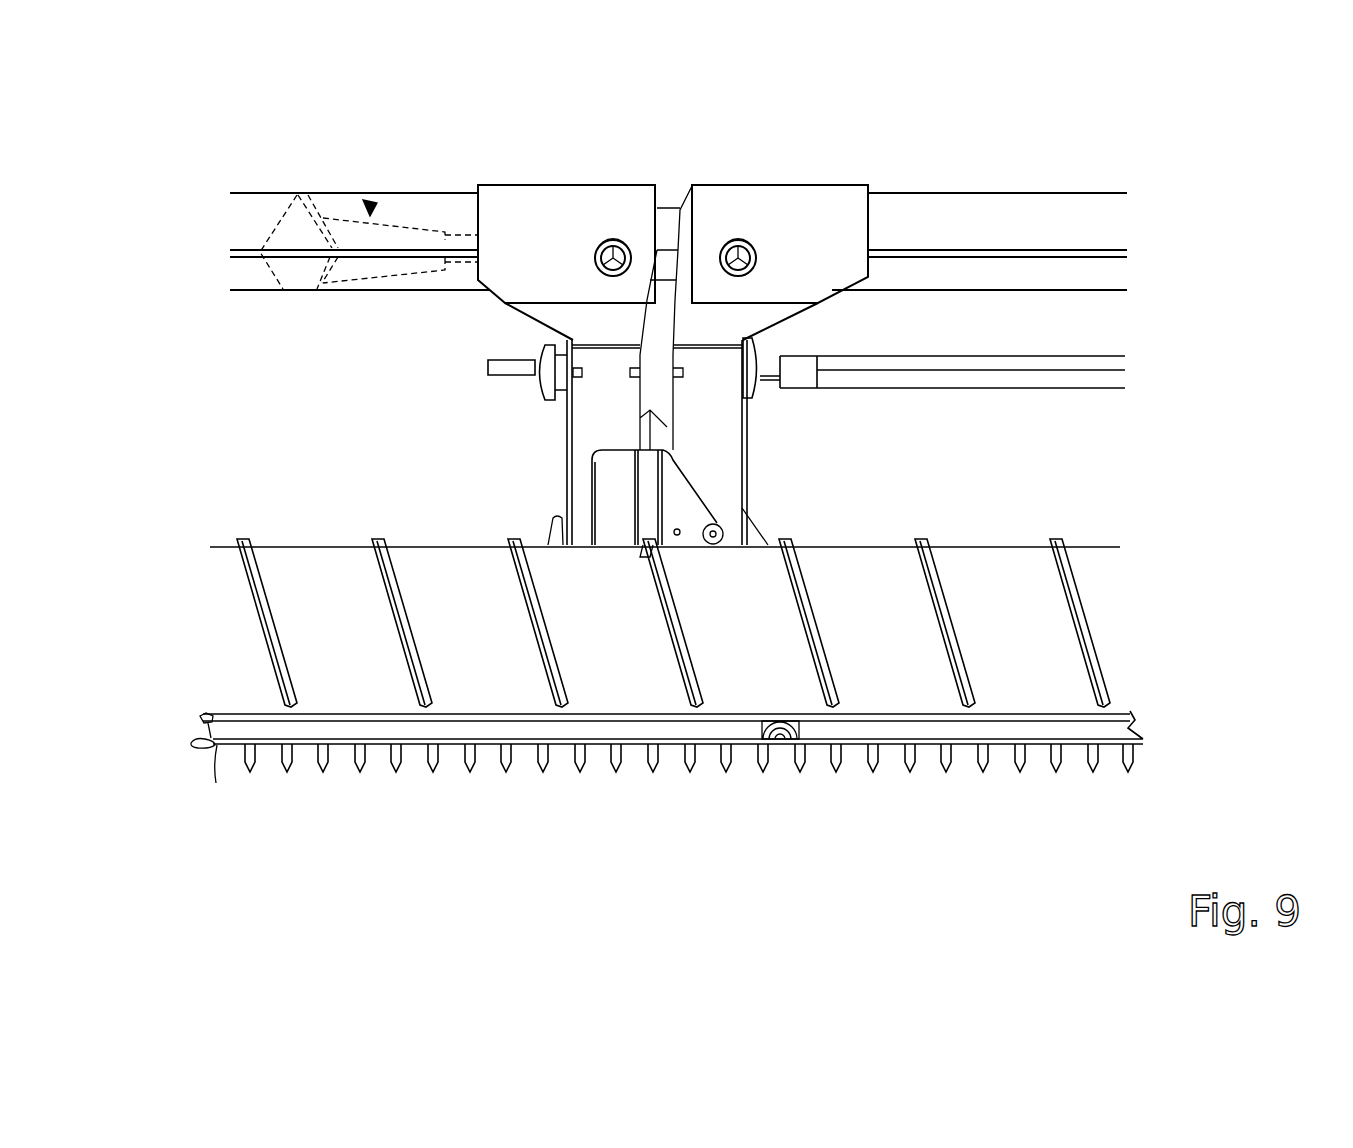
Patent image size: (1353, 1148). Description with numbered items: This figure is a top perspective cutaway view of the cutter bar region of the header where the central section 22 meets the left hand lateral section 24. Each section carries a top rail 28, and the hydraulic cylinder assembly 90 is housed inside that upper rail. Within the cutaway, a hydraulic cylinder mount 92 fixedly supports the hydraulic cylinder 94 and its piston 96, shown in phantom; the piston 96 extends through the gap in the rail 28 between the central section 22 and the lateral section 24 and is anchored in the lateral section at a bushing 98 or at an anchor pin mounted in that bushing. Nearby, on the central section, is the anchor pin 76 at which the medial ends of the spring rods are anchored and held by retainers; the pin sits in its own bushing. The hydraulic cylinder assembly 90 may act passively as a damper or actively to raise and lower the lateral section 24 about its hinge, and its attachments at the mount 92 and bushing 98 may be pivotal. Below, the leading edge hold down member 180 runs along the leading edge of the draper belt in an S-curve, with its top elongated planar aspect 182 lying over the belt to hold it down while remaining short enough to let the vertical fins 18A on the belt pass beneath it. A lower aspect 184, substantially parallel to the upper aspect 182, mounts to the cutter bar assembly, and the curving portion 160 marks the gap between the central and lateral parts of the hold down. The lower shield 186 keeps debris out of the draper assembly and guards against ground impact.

The vertical fins 18A is at (1083, 628).
The central section 22 is at (382, 449).
The left hand lateral section 24 is at (933, 475).
The top rail 28 is at (980, 228).
The anchor pin 76 is at (608, 240).
The hydraulic cylinder assembly 90 is at (369, 204).
The hydraulic cylinder mount 92 is at (289, 232).
The hydraulic cylinder 94 is at (405, 240).
The piston 96 is at (665, 228).
The bushing 98 is at (757, 245).
The curving portion 160 is at (793, 787).
The leading edge hold down member 180 is at (1108, 728).
The top elongated planar aspect 182 is at (206, 716).
The lower aspect 184 is at (216, 783).
The lower shield 186 is at (195, 745).